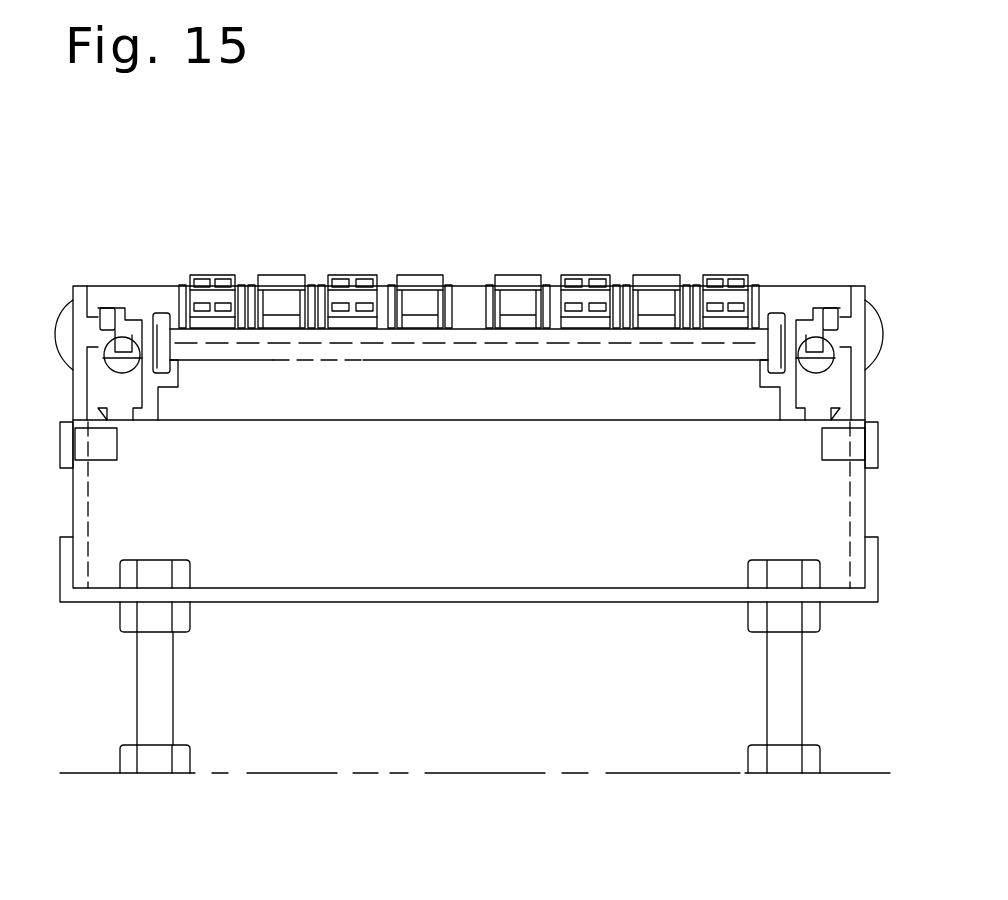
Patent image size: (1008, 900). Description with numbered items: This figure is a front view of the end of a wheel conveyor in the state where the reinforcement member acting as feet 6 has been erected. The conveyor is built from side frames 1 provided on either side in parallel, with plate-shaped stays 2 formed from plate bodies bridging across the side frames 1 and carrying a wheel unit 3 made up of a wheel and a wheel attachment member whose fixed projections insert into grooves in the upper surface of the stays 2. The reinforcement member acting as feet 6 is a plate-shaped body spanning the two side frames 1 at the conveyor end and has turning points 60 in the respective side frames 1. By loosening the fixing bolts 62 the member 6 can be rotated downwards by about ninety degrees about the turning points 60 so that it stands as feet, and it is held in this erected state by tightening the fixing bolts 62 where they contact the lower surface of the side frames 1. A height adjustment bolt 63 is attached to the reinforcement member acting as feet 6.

The side frame 1 is at (123, 295).
The plate-shaped stay 2 is at (405, 353).
The wheel unit 3 is at (424, 292).
The reinforcement member acting as feet 6 is at (438, 785).
The turning point 60 is at (57, 333).
The fixing bolt 62 is at (68, 447).
The height adjustment bolt 63 is at (163, 707).